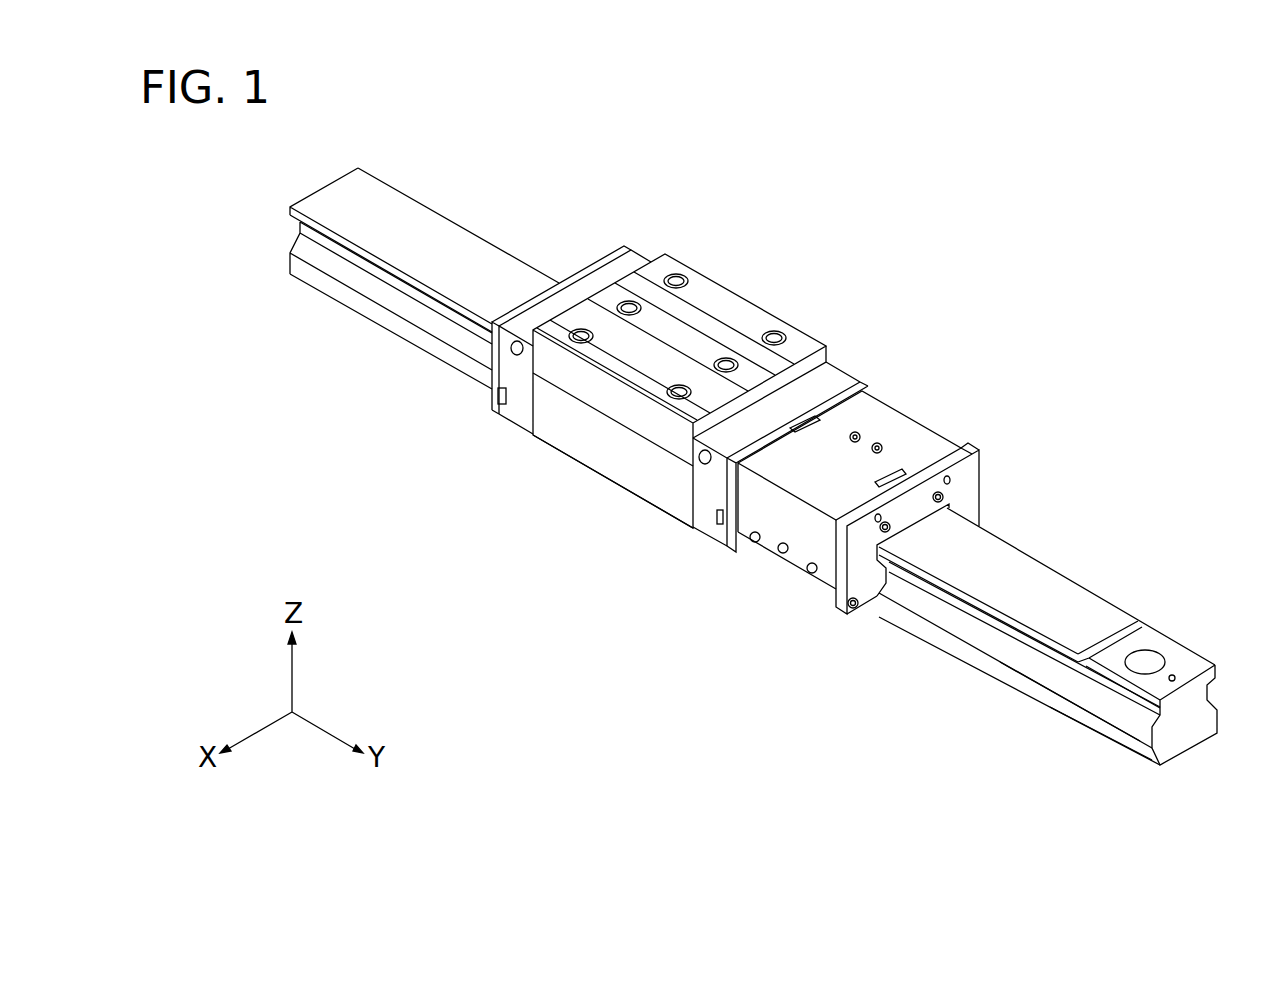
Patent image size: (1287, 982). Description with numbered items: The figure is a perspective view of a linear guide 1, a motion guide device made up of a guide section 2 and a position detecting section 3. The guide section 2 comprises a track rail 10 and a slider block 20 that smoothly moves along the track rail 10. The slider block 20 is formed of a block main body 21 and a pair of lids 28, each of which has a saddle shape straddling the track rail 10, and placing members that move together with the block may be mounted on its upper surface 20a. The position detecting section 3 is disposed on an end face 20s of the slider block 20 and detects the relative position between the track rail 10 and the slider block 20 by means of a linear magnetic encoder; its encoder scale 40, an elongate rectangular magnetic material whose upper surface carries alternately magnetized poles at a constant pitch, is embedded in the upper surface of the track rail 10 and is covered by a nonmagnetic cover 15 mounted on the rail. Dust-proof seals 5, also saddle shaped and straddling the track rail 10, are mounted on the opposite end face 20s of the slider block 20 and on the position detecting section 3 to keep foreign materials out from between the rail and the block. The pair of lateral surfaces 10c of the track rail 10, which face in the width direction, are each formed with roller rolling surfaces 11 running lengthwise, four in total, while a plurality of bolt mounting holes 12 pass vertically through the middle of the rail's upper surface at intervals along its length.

The linear guide 1 is at (822, 190).
The guide section 2 is at (637, 228).
The position detecting section 3 is at (927, 403).
The dust-proof seal 5 is at (588, 262).
The track rail 10 is at (1143, 637).
The lateral surface 10c is at (1040, 653).
The roller rolling surface 11 is at (1137, 725).
The bolt mounting hole 12 is at (1160, 662).
The nonmagnetic cover 15 is at (398, 207).
The slider block 20 is at (777, 309).
The upper surface 20a is at (722, 296).
The end face 20s is at (606, 262).
The block main body 21 is at (598, 466).
The lid 28 is at (520, 413).
The encoder scale 40 is at (1112, 677).